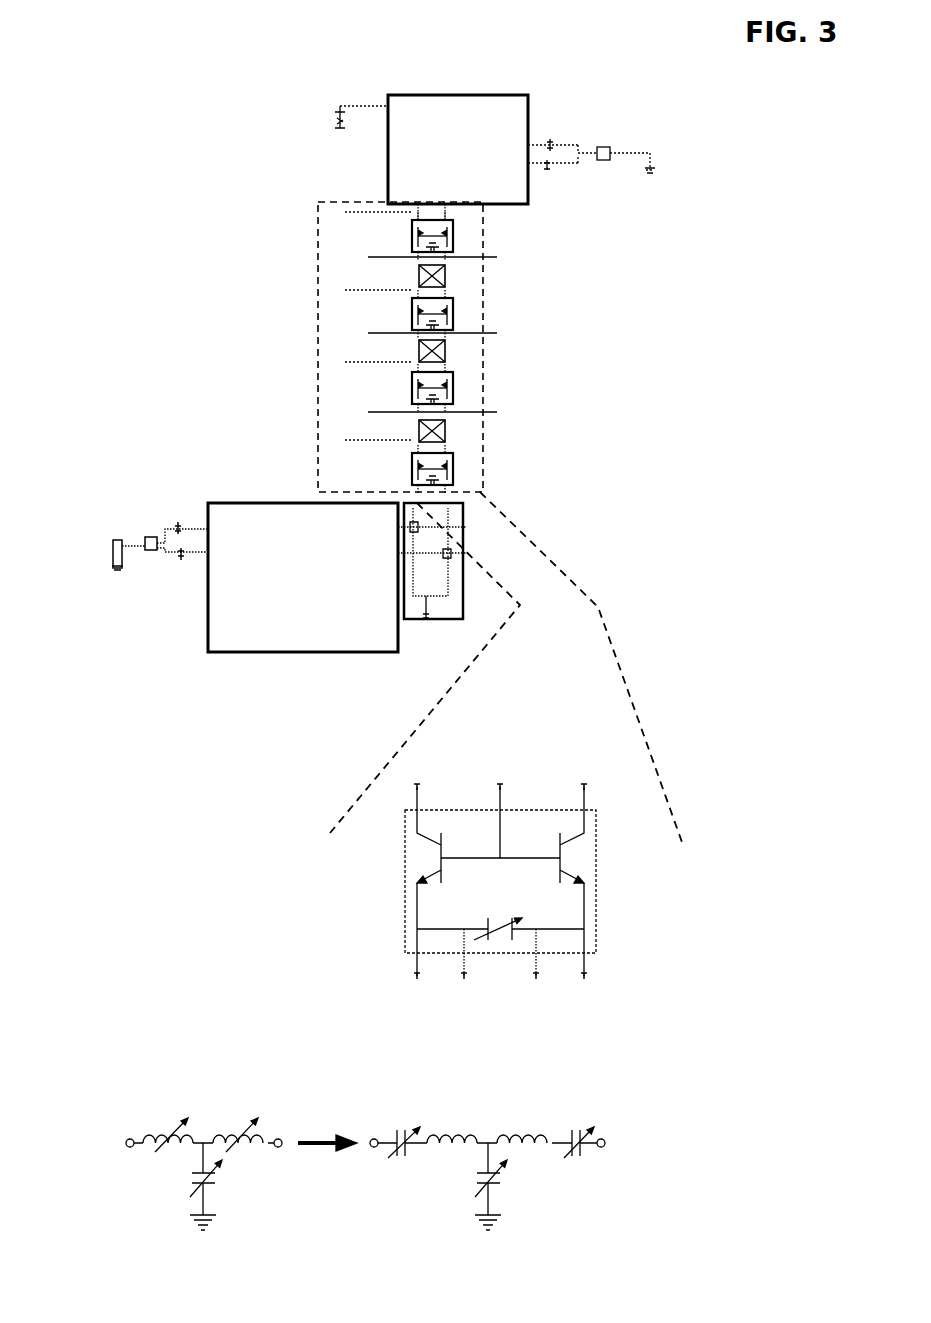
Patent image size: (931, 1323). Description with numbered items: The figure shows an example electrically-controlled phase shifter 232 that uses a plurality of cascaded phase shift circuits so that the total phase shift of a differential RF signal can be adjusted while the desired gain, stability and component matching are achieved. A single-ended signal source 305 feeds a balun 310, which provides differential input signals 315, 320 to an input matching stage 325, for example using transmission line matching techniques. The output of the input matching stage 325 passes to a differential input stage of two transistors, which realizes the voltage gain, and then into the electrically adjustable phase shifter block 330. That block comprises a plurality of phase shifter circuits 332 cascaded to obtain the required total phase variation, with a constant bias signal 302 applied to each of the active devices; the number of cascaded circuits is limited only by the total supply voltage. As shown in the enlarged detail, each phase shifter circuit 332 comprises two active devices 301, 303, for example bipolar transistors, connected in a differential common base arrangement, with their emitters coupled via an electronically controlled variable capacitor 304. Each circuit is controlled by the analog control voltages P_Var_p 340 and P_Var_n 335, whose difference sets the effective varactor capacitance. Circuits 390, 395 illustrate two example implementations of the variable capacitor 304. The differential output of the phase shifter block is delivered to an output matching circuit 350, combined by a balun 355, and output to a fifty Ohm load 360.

The electrically-controlled phase shifter 232 is at (203, 65).
The active device 301 is at (513, 943).
The constant bias signal 302 is at (403, 212).
The active device 303 is at (420, 853).
The electronically controlled variable capacitor 304 is at (580, 865).
The single-ended signal source 305 is at (107, 554).
The balun 310 is at (150, 537).
The differential input signal 315 is at (181, 528).
The differential input signal 320 is at (197, 553).
The input matching stage 325 is at (337, 577).
The amplifier stack 330 is at (316, 260).
The phase shifter circuit 332 is at (471, 459).
The analog control voltage P_Var_n 335 is at (372, 257).
The analog control voltage P_Var_p 340 is at (470, 333).
The output matching circuit 350 is at (456, 149).
The balun 355 is at (602, 143).
The 50 Ohm load 360 is at (632, 152).
The variable capacitor implementation circuit 390 is at (178, 1097).
The variable capacitor implementation circuit 395 is at (537, 1093).